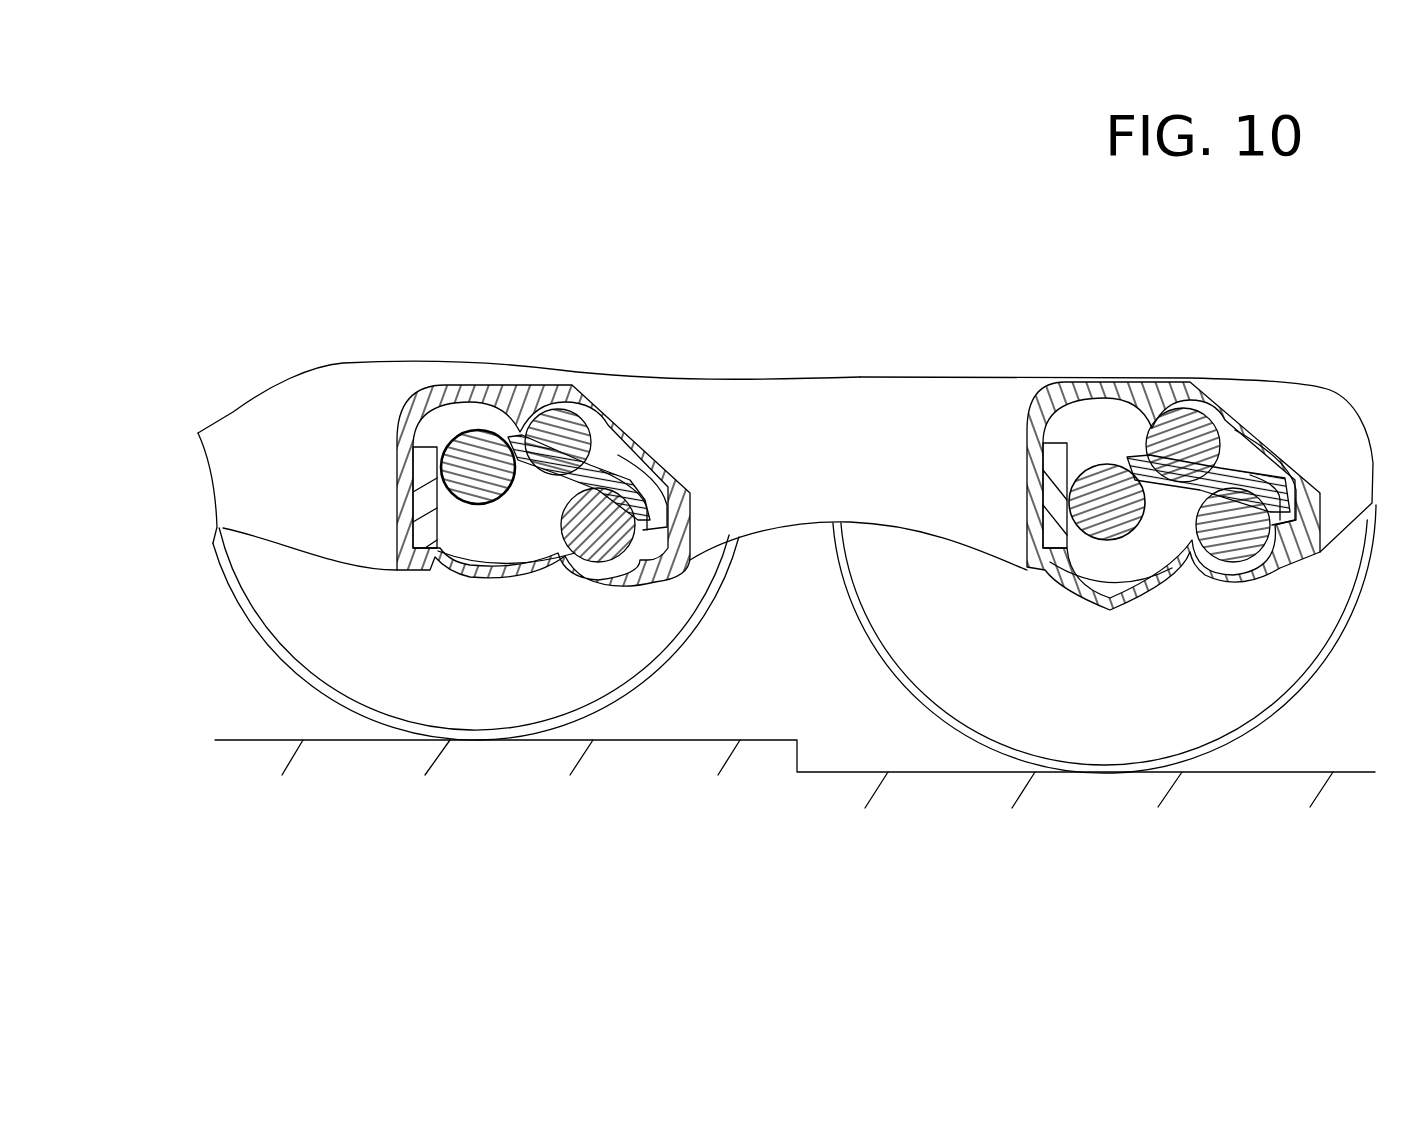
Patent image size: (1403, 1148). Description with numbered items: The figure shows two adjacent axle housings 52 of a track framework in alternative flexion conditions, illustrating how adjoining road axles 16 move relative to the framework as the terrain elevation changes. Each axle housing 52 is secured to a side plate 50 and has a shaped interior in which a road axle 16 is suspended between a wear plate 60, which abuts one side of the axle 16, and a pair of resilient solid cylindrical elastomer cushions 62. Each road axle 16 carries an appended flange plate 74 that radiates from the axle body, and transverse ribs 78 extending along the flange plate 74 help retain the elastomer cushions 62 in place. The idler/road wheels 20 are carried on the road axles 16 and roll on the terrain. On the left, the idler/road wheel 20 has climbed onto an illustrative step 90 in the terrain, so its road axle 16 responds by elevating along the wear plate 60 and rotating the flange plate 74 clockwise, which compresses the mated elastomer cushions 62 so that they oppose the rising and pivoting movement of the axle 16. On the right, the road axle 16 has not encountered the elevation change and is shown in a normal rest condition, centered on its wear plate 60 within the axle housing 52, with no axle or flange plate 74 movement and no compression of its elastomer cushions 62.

The side plate 50 is at (250, 407).
The axle housing 52 is at (1035, 403).
The road axle 16 is at (477, 428).
The elastomer cushion 62 is at (602, 482).
The flange plate 74 is at (632, 478).
The wear plate 60 is at (410, 497).
The transverse rib 78 is at (560, 510).
The idler/road wheel 20 is at (640, 660).
The step 90 is at (795, 757).